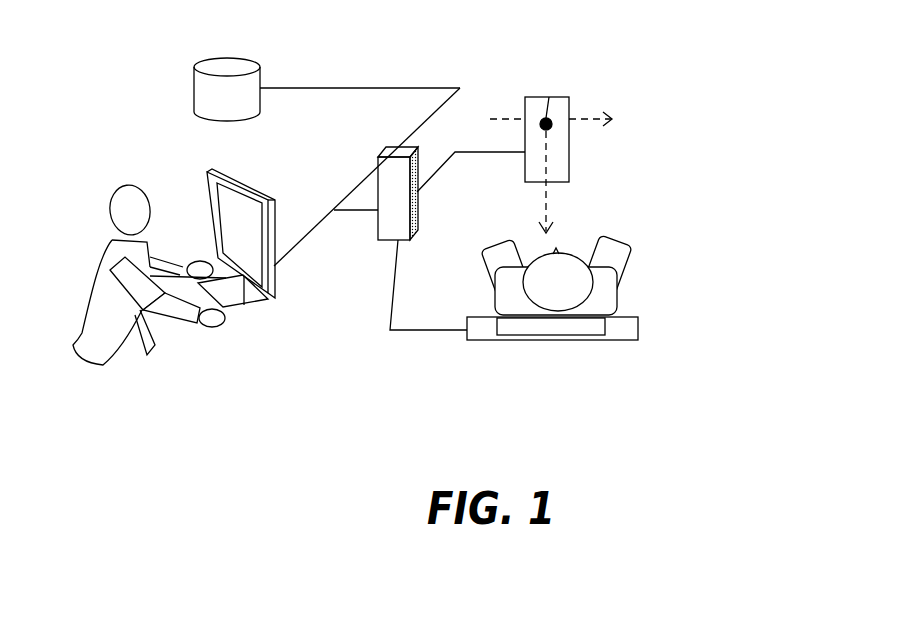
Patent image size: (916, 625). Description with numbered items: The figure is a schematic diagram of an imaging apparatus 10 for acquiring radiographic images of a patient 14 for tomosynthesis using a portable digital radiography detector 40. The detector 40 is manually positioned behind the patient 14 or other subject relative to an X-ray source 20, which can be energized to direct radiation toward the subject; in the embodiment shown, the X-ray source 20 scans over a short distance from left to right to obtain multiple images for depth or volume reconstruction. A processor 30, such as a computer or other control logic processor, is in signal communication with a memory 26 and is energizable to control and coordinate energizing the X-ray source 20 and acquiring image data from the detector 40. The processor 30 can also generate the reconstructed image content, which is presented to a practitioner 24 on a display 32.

The imaging apparatus 10 is at (886, 125).
The patient 14 is at (621, 286).
The X-ray source 20 is at (563, 97).
The practitioner 24 is at (82, 231).
The memory 26 is at (196, 82).
The processor 30 is at (380, 243).
The display 32 is at (243, 297).
The portable digital radiography (DR) detector 40 is at (557, 330).